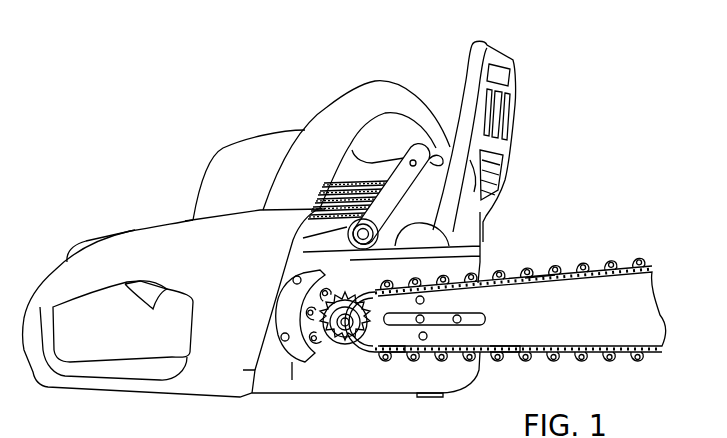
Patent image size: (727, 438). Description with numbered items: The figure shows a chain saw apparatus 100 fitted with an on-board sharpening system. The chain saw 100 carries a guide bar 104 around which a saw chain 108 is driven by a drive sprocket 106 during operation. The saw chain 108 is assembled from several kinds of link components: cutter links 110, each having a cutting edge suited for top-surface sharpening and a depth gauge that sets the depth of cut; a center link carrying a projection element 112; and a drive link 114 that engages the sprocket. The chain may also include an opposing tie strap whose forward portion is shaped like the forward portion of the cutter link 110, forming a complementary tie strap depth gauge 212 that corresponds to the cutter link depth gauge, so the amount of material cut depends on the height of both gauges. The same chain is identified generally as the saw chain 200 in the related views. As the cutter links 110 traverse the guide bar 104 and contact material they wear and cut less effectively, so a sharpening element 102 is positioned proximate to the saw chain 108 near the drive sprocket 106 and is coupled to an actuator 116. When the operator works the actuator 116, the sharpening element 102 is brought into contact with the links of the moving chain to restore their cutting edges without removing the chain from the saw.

The chain saw apparatus 100 is at (269, 219).
The sharpening element 102 is at (292, 380).
The guide bar 104 is at (588, 324).
The drive sprocket 106 is at (345, 350).
The saw chain 108 is at (642, 371).
The cutter link 110 is at (506, 364).
The projection element 112 is at (537, 265).
The drive link 114 is at (393, 352).
The actuator 116 is at (412, 146).
The saw chain 200 is at (100, 437).
The tie strap depth gauge 212 is at (11, 430).